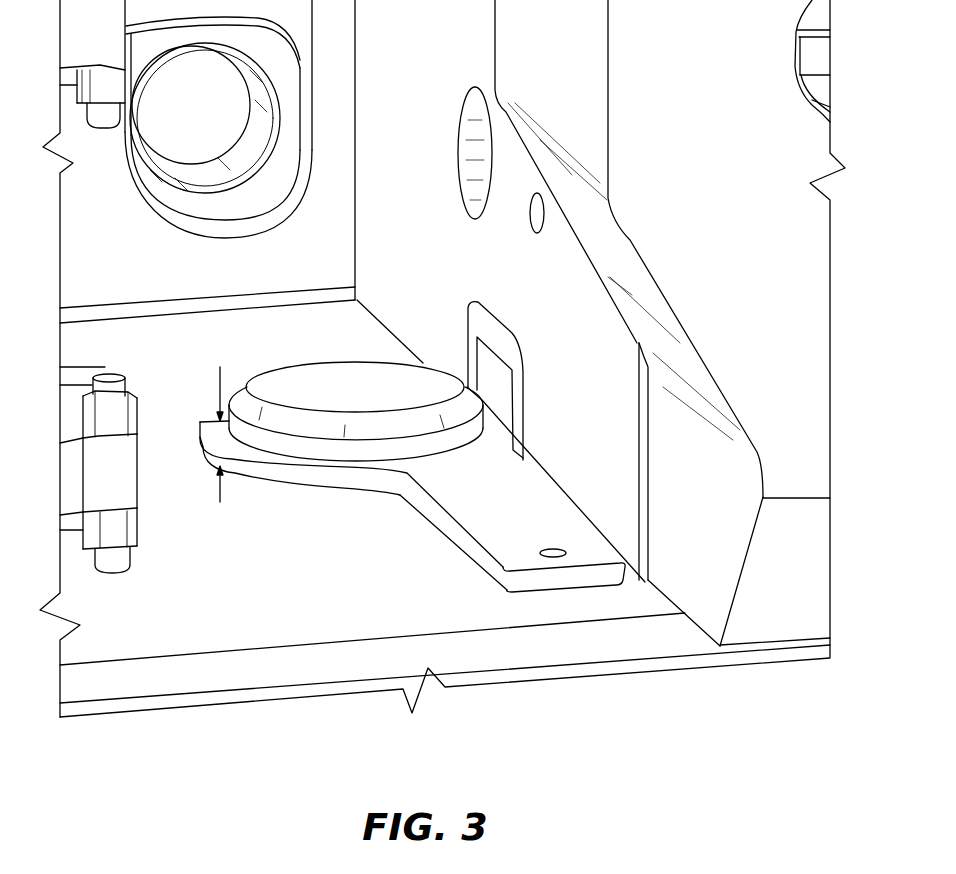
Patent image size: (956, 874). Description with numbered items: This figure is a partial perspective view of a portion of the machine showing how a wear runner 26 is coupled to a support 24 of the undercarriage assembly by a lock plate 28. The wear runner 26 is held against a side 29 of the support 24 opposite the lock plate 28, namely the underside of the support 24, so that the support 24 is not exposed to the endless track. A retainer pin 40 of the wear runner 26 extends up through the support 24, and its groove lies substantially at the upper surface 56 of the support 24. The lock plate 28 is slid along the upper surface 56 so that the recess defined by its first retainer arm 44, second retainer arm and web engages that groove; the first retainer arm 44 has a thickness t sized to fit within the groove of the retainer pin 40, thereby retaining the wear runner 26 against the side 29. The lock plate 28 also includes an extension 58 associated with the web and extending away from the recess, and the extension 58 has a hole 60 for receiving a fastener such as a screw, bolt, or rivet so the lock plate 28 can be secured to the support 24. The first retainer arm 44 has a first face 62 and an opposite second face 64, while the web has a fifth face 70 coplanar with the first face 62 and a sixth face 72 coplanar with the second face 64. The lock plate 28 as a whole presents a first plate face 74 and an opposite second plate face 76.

The support 24 is at (231, 628).
The wear runner 26 is at (287, 377).
The lock plate 28 is at (384, 491).
The side 29 is at (293, 687).
The retainer pin 40 is at (350, 370).
The first retainer arm 44 is at (200, 440).
The upper surface 56 is at (302, 592).
The extension 58 is at (523, 487).
The hole 60 is at (557, 557).
The first face 62 is at (213, 420).
The second face 64 is at (248, 474).
The fifth face 70 is at (425, 457).
The sixth face 72 is at (398, 494).
The first plate face 74 is at (473, 463).
The second plate face 76 is at (435, 527).